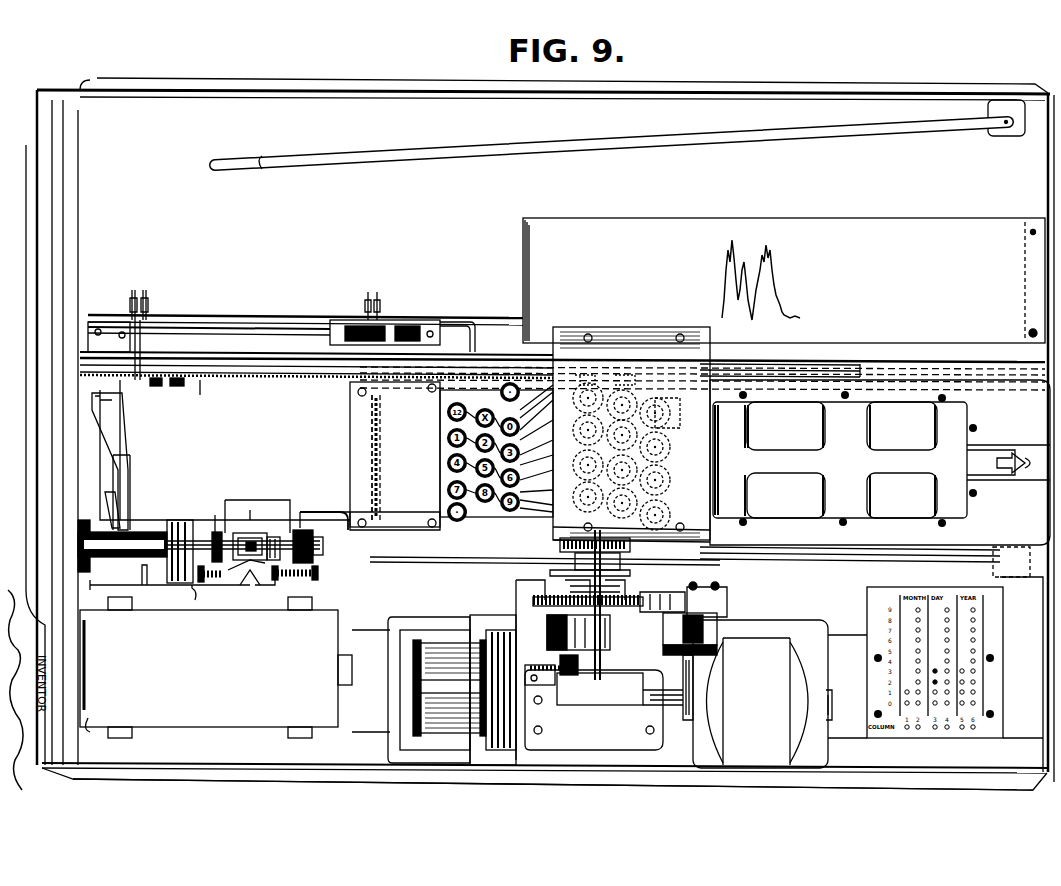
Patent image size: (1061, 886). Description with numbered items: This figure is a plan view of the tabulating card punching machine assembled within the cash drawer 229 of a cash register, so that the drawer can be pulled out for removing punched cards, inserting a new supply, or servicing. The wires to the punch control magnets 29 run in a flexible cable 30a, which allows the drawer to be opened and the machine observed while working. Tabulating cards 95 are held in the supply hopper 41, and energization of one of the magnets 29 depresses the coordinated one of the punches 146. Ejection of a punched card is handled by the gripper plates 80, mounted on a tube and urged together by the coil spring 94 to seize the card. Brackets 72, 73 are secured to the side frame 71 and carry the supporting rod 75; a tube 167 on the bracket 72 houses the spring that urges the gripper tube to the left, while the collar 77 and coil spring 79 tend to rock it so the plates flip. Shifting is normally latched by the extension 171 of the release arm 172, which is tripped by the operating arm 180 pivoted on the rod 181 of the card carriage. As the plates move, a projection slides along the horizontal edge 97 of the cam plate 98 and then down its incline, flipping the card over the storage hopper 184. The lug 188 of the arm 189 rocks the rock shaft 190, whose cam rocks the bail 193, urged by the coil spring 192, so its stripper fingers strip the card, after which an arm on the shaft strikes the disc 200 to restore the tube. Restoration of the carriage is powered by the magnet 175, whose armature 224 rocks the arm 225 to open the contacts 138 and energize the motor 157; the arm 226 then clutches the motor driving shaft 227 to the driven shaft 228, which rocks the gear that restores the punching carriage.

The cable 30a is at (330, 165).
The rod 181 is at (158, 362).
The lug 188 is at (156, 388).
The arm 189 is at (176, 388).
The tabulating card 95 is at (200, 396).
The operating arm 180 is at (120, 430).
The punches 146 is at (372, 475).
The release arm 172 is at (128, 480).
The extension 171 is at (112, 500).
The disc 200 is at (218, 512).
The gripper plates 80 is at (255, 505).
The coil spring 94 is at (282, 512).
The side frame 71 is at (340, 512).
The tube 167 is at (150, 535).
The rock shaft 190 is at (200, 520).
The collar 77 is at (312, 536).
The coil spring 79 is at (323, 546).
The bracket 72 is at (76, 556).
The supporting rod 75 is at (135, 568).
The bracket 73 is at (316, 573).
The coil spring 192 is at (300, 582).
The cam plate 98 is at (232, 582).
The horizontal edge 97 is at (252, 580).
The bail 193 is at (192, 590).
The storage hopper 184 is at (198, 727).
The cash drawer 229 is at (640, 528).
The punch control magnet 29 is at (640, 405).
The supply hopper 41 is at (905, 417).
The arm 226 is at (545, 578).
The driven shaft 228 is at (612, 572).
The magnet 175 is at (438, 640).
The arm 225 is at (505, 630).
The contacts 138 is at (615, 650).
The driving shaft 227 is at (603, 650).
The armature 224 is at (510, 730).
The motor 157 is at (757, 653).